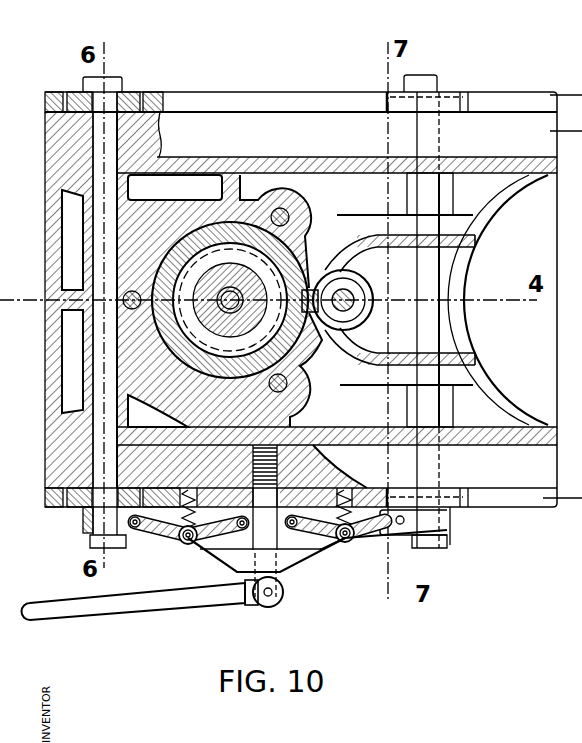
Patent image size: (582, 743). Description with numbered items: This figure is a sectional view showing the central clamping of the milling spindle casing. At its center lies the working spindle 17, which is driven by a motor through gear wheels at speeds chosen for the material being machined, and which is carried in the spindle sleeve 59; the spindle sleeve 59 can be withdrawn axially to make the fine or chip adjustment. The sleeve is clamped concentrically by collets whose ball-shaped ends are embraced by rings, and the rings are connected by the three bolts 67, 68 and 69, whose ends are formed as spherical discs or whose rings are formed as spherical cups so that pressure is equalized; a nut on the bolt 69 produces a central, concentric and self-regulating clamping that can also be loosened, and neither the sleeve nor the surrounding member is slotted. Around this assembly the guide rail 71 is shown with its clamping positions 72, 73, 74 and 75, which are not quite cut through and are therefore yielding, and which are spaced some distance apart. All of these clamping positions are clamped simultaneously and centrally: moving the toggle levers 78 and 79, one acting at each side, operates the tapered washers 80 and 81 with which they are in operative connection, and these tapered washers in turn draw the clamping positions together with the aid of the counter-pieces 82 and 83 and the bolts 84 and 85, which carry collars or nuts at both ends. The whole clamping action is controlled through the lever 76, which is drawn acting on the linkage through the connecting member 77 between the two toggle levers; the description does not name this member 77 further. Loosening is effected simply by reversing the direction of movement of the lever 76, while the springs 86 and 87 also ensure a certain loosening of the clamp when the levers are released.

The working spindle 17 is at (168, 250).
The spindle sleeve 59 is at (258, 200).
The bolt 67 is at (307, 208).
The bolt 68 is at (305, 406).
The bolt 69 is at (118, 316).
The guide rail 71 is at (225, 100).
The clamping position 72 is at (450, 92).
The clamping position 73 is at (128, 93).
The clamping position 74 is at (80, 490).
The clamping position 75 is at (448, 490).
The lever 76 is at (160, 600).
The yoke 77 is at (300, 558).
The toggle lever 78 is at (213, 545).
The toggle lever 79 is at (327, 542).
The tapered washer 80 is at (423, 513).
The tapered washer 81 is at (83, 518).
The counter-piece 82 is at (84, 528).
The counter-piece 83 is at (433, 545).
The bolt 84 is at (103, 233).
The bolt 85 is at (425, 267).
The spring 86 is at (150, 530).
The spring 87 is at (407, 480).